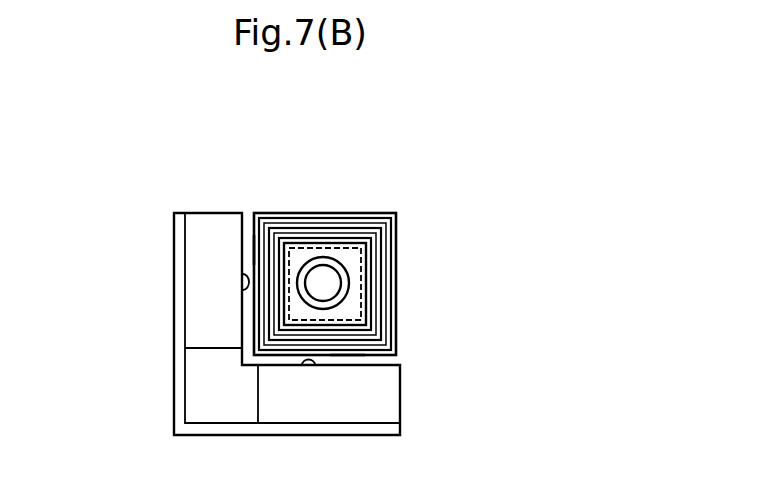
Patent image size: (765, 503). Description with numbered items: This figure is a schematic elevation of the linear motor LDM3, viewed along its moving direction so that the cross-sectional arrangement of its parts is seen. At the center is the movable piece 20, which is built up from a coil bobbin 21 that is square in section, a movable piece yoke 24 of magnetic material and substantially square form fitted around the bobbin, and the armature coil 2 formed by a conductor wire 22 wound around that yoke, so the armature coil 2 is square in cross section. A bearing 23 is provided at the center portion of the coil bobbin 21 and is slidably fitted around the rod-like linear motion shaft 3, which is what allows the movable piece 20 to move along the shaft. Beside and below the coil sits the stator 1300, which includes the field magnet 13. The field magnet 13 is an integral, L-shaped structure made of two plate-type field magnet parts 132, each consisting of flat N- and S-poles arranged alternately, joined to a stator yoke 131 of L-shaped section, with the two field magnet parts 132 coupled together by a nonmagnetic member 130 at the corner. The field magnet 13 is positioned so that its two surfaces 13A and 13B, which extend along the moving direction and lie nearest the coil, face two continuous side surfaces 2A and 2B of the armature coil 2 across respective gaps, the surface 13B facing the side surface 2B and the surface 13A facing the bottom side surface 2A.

The stator 1300 is at (173, 229).
The field magnet 13 is at (205, 266).
The field magnet part 132 is at (200, 287).
The nonmagnetic member 130 is at (203, 392).
The stator yoke 131 is at (223, 430).
The surface of the field magnet 13B is at (241, 288).
The surface of the field magnet 13A is at (313, 365).
The armature coil 2 is at (397, 222).
The movable piece 20 is at (329, 211).
The conductor wire 22 is at (343, 228).
The movable piece yoke 24 is at (365, 320).
The coil bobbin 21 is at (352, 312).
The bearing 23 is at (347, 288).
The linear motion shaft 3 is at (330, 278).
The side surface of the armature coil 2B is at (255, 250).
The side surface of the armature coil 2A is at (347, 356).
The linear motor LDM3 is at (518, 273).